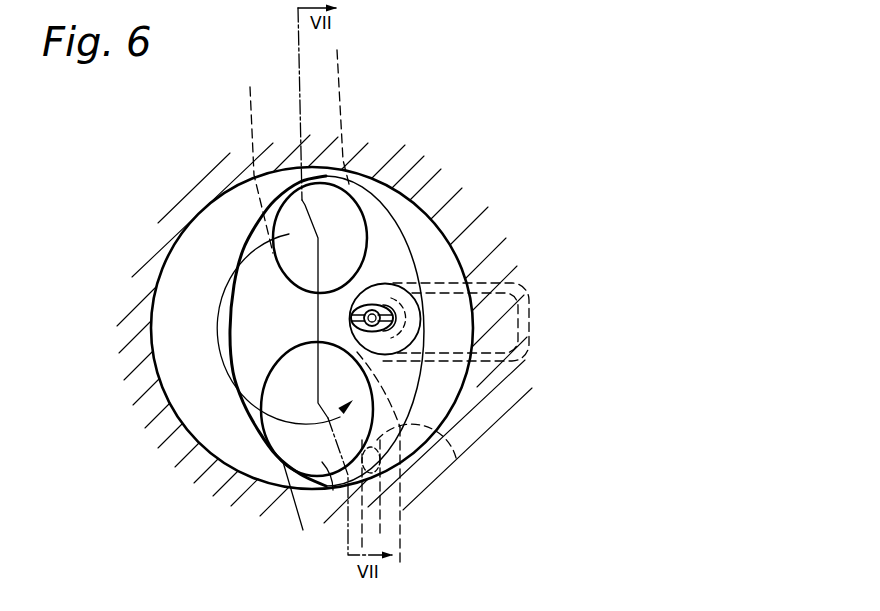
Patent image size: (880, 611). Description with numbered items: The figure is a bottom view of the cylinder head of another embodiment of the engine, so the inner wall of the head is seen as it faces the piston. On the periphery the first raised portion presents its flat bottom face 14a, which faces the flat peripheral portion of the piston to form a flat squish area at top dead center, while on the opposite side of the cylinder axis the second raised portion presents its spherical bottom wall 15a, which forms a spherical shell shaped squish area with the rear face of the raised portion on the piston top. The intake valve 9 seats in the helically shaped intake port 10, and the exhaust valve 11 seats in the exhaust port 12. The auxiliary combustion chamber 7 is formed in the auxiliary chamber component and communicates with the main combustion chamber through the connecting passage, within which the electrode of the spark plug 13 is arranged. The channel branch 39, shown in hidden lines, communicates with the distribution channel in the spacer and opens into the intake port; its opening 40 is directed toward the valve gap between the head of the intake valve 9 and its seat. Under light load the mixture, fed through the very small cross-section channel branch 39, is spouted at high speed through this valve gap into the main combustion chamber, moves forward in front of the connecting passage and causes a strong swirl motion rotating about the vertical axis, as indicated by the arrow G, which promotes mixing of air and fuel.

The auxiliary combustion chamber 7 is at (452, 294).
The intake valve 9 is at (333, 490).
The intake port 10 is at (303, 530).
The exhaust valve 11 is at (341, 203).
The exhaust port 12 is at (343, 72).
The spark plug 13 is at (372, 305).
The flat bottom face 14a is at (427, 237).
The bottom wall 15a is at (178, 372).
The channel branch 39 is at (383, 533).
The opening 40 is at (457, 462).
The arrow indicating swirl motion G is at (301, 422).